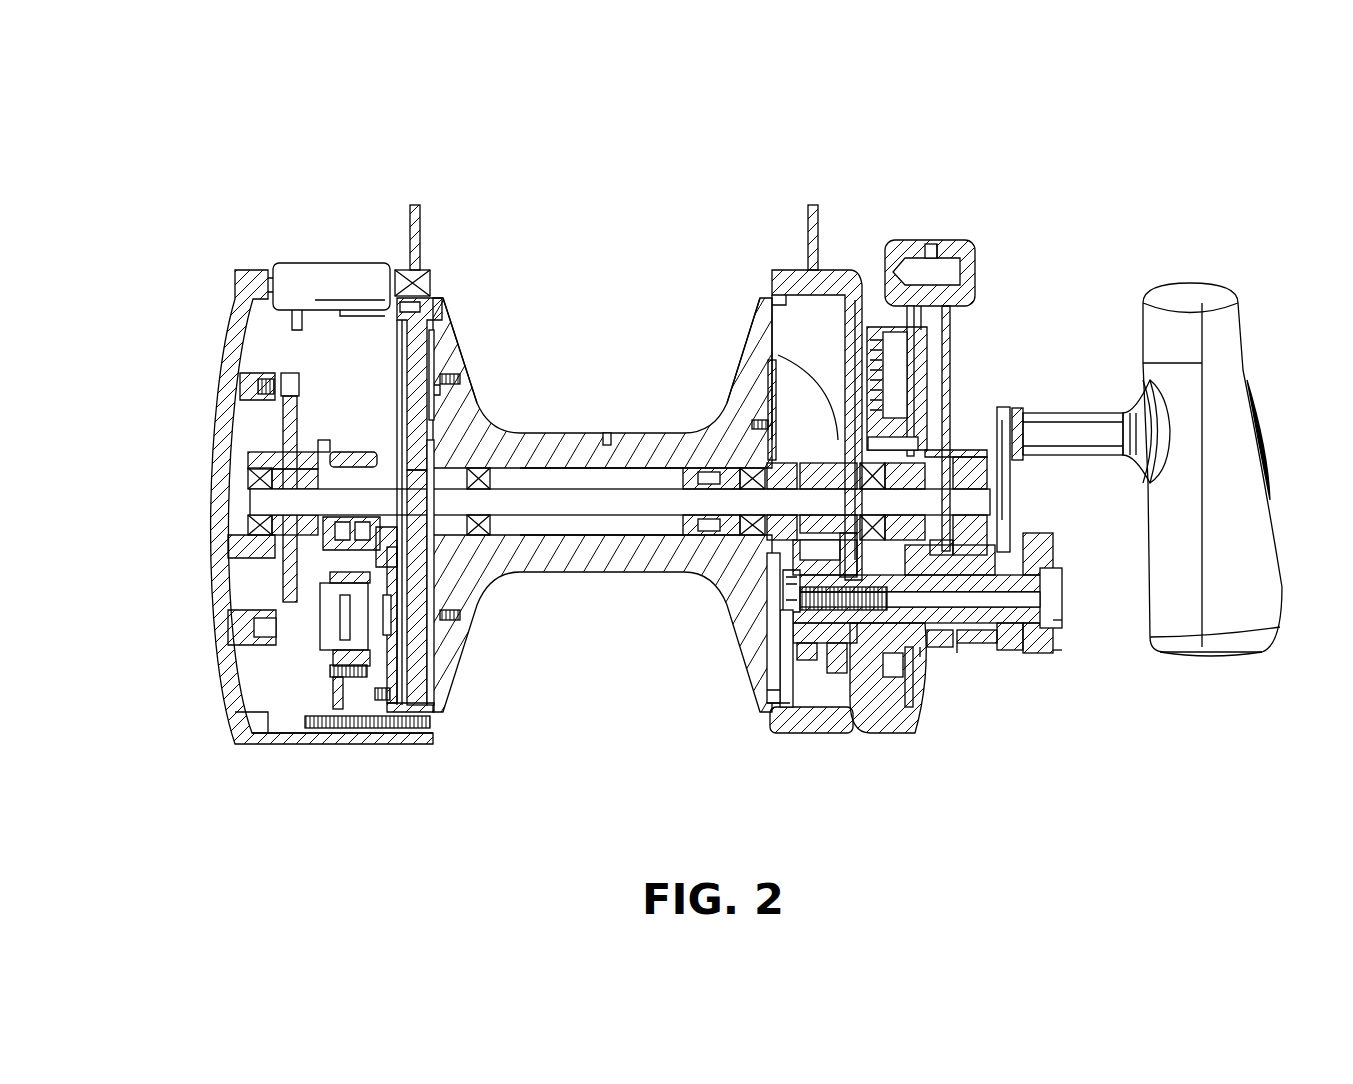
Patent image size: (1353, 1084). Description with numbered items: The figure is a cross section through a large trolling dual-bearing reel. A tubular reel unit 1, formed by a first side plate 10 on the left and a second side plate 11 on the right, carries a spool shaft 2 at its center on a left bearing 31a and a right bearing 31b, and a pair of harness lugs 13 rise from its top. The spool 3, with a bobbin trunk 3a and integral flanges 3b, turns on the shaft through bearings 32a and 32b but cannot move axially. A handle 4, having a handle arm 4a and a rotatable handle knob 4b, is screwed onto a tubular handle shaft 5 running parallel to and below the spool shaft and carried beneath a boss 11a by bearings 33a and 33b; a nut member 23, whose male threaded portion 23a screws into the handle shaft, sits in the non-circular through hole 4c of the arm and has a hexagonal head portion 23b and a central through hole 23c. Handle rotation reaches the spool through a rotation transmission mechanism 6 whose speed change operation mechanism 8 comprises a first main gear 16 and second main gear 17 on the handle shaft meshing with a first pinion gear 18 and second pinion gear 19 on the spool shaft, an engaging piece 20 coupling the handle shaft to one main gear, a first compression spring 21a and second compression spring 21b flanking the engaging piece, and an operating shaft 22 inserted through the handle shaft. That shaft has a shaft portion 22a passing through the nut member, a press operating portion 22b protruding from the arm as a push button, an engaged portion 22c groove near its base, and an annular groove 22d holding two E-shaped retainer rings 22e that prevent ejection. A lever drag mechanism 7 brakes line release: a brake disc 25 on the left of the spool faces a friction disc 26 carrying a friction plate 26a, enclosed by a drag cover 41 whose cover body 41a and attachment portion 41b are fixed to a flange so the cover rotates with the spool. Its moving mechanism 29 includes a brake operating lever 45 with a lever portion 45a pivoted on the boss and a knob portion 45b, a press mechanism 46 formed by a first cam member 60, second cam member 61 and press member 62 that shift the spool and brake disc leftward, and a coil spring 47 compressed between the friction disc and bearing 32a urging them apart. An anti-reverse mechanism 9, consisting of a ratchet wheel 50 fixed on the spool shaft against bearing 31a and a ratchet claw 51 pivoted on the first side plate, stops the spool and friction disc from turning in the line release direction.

The reel unit 1 is at (835, 185).
The spool shaft 2 is at (570, 503).
The spool 3 is at (565, 432).
The bobbin trunk 3a is at (632, 432).
The flange 3b is at (455, 340).
The handle 4 is at (1205, 280).
The handle arm 4a is at (1035, 655).
The handle knob 4b is at (1255, 540).
The through hole 4c is at (1000, 650).
The handle shaft 5 is at (940, 625).
The rotation transmission mechanism 6 is at (800, 680).
The lever drag mechanism 7 is at (388, 650).
The speed change operation mechanism 8 is at (1068, 560).
The anti-reverse mechanism 9 is at (265, 565).
The first side plate 10 is at (240, 265).
The second side plate 11 is at (840, 268).
The boss 11a is at (1030, 416).
The harness lugs 13 is at (415, 208).
The first main gear 16 is at (815, 708).
The second main gear 17 is at (765, 640).
The first pinion gear 18 is at (782, 430).
The second pinion gear 19 is at (822, 440).
The engaging piece 20 is at (775, 610).
The first compression spring 21a is at (790, 625).
The second compression spring 21b is at (810, 665).
The operating shaft 22 is at (1075, 580).
The shaft portion 22a is at (918, 645).
The press operating portion 22b is at (1065, 592).
The engaged portion 22c is at (1062, 610).
The annular groove 22d is at (958, 650).
The E-shaped retainer rings 22e is at (965, 648).
The nut member 23 is at (1062, 630).
The male threaded portion 23a is at (1078, 665).
The head portion 23b is at (1070, 645).
The through hole 23c is at (1012, 550).
The brake disc 25 is at (437, 685).
The friction disc 26 is at (430, 735).
The friction plate 26a is at (445, 720).
The moving mechanism 29 is at (1030, 235).
The bearing 31a is at (250, 528).
The bearing 31b is at (895, 655).
The bearing 32a is at (490, 540).
The bearing 32b is at (752, 540).
The bearing 33a is at (855, 615).
The bearing 33b is at (985, 650).
The drag cover 41 is at (428, 318).
The cover body 41a is at (432, 380).
The attachment portion 41b is at (418, 296).
The brake operating lever 45 is at (925, 238).
The lever portion 45a is at (915, 322).
The knob portion 45b is at (958, 240).
The press mechanism 46 is at (940, 420).
The coil spring 47 is at (470, 600).
The ratchet wheel 50 is at (278, 440).
The ratchet claw 51 is at (232, 396).
The first cam member 60 is at (935, 450).
The second cam member 61 is at (948, 462).
The press member 62 is at (972, 470).